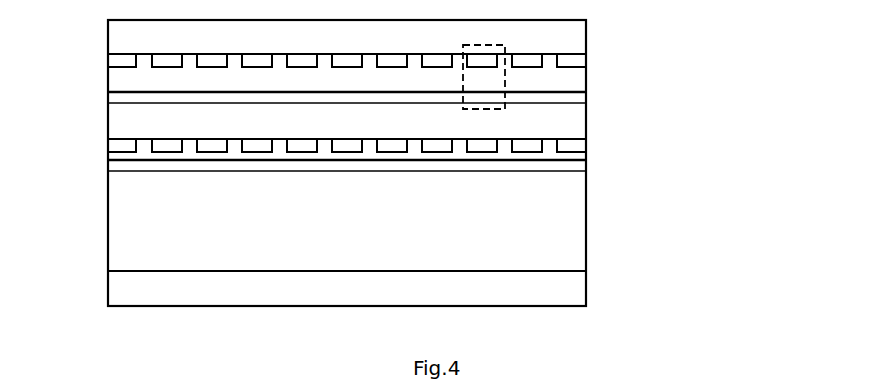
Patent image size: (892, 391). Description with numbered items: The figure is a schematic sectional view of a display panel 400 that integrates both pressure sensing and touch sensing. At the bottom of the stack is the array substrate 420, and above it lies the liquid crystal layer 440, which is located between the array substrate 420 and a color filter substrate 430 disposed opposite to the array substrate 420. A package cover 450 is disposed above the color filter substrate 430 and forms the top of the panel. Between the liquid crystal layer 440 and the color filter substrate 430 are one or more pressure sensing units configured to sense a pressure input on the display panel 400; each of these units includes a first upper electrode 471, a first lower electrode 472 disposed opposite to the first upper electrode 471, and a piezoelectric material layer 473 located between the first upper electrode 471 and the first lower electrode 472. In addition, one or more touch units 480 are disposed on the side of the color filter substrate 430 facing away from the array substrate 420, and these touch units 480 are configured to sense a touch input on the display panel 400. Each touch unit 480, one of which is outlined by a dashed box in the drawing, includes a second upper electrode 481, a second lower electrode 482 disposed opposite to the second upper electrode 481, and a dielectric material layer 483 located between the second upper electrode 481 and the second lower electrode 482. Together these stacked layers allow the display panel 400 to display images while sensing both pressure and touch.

The display panel 400 is at (73, 20).
The array substrate 420 is at (347, 291).
The color filter substrate 430 is at (347, 124).
The liquid crystal layer 440 is at (347, 241).
The package cover 450 is at (347, 40).
The first upper electrode 471 is at (570, 146).
The first lower electrode 472 is at (570, 164).
The piezoelectric material layer 473 is at (570, 155).
The touch unit 480 is at (498, 51).
The second upper electrode 481 is at (570, 61).
The second lower electrode 482 is at (570, 98).
The dielectric material layer 483 is at (570, 81).